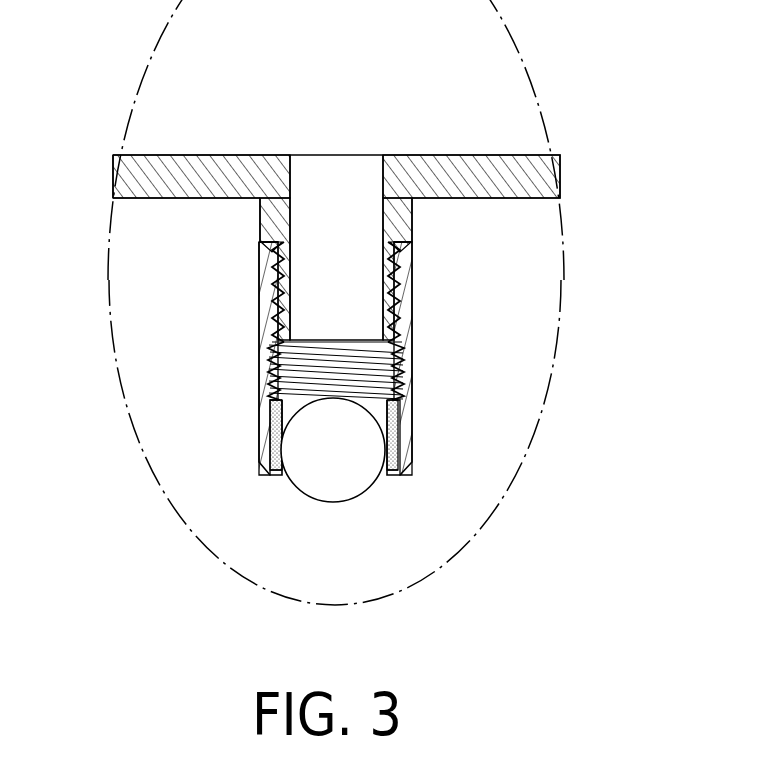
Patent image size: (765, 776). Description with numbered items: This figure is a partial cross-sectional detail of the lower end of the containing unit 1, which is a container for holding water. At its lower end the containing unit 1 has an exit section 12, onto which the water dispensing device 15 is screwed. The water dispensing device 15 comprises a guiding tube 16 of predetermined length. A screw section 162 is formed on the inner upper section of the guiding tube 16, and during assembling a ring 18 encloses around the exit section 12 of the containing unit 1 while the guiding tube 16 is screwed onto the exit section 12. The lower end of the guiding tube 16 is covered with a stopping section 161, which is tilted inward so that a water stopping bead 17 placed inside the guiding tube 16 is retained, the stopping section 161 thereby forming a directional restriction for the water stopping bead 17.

The containing unit 1 is at (500, 173).
The exit section 12 is at (400, 220).
The water dispensing device 15 is at (395, 405).
The guiding tube 16 is at (459, 360).
The stopping section 161 is at (393, 433).
The screw section 162 is at (397, 303).
The water stopping bead 17 is at (318, 478).
The ring 18 is at (263, 248).